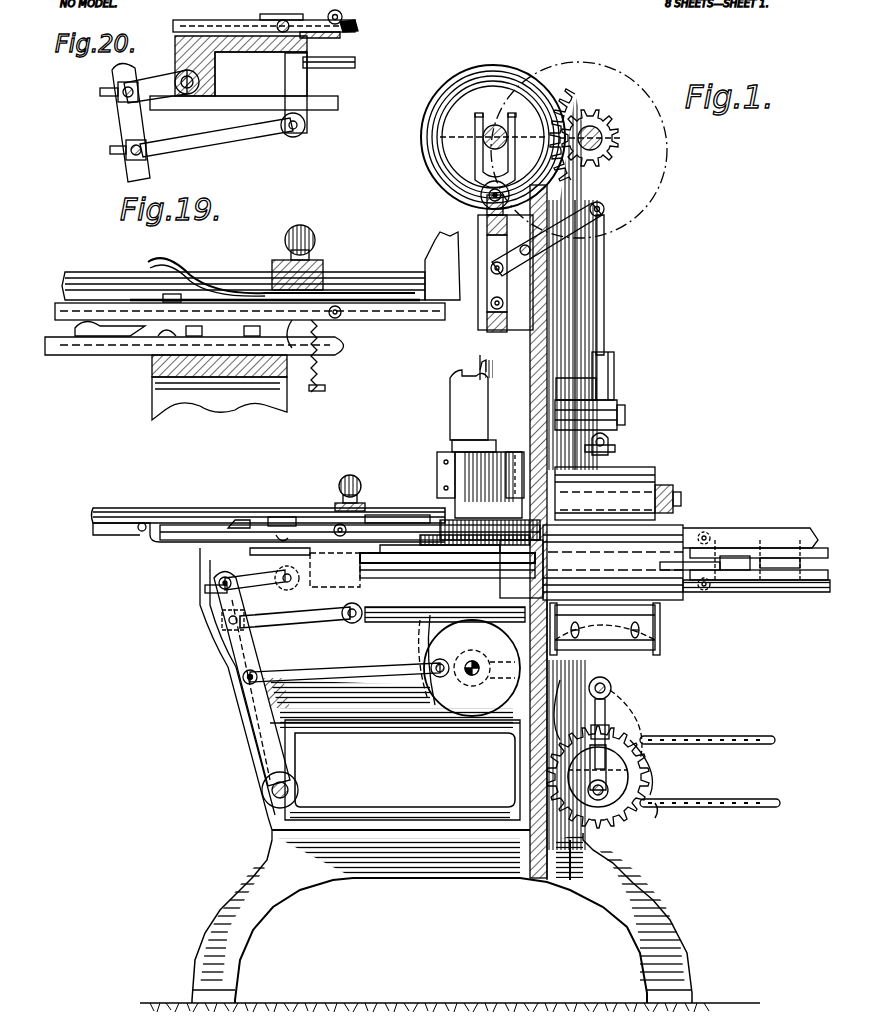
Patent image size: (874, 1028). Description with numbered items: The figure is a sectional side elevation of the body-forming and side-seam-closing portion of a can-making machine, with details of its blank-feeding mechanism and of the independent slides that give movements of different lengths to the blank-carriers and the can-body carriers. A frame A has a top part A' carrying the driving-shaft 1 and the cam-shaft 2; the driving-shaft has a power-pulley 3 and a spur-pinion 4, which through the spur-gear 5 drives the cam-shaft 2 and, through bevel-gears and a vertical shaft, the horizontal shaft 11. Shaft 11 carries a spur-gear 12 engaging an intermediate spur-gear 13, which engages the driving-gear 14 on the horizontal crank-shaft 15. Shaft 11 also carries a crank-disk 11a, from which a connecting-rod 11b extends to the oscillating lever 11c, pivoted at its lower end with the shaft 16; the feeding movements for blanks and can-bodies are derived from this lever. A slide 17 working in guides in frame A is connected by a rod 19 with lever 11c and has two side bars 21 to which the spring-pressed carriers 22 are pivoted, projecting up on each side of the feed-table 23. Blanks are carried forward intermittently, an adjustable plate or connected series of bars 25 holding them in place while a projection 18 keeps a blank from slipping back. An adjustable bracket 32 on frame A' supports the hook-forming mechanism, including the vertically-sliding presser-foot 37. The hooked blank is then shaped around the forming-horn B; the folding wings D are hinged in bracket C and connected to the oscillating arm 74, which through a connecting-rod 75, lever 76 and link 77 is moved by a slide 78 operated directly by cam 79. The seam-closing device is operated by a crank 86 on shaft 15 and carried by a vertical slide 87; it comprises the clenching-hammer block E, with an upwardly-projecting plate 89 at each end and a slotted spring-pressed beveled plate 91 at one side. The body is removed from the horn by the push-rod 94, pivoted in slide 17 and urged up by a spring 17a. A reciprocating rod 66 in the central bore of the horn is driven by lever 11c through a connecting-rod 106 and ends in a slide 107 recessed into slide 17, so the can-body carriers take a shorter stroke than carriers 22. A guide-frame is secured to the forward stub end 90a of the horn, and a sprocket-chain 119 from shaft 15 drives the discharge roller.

In FIG. 1, the driving-shaft 1 is at (596, 128).
In FIG. 1, the cam-shaft 2 is at (488, 132).
In FIG. 1, the power-pulley 3 is at (663, 153).
In FIG. 1, the spur-pinion 4 is at (606, 150).
In FIG. 1, the spur-gear 5 is at (556, 112).
In FIG. 1, the horizontal shaft 11 is at (470, 676).
In FIG. 1, the crank-disk 11a is at (440, 690).
In FIG. 1, the connecting-rod 11b is at (335, 664).
In FIG. 20, the oscillating lever 11c is at (122, 125).
In FIG. 1, the oscillating lever 11c is at (245, 712).
In FIG. 1, the spur-gear 12 is at (420, 650).
In FIG. 1, the intermediate spur-gear 13 is at (626, 710).
In FIG. 1, the driving-gear 14 is at (620, 820).
In FIG. 1, the horizontal crank-shaft 15 is at (660, 738).
In FIG. 1, the shaft 16 is at (272, 792).
In FIG. 20, the slide 17 is at (244, 73).
In FIG. 19, the slide 17 is at (152, 392).
In FIG. 1, the slide 17 is at (305, 569).
In FIG. 1, the spring 17a is at (285, 540).
In FIG. 19, the projection 18 is at (185, 298).
In FIG. 1, the projection 18 is at (298, 520).
In FIG. 20, the rod 19 is at (178, 96).
In FIG. 1, the rod 19 is at (250, 576).
In FIG. 20, the side bars 21 is at (345, 22).
In FIG. 19, the side bars 21 is at (338, 352).
In FIG. 1, the side bars 21 is at (160, 545).
In FIG. 19, the spring-pressed carriers 22 is at (140, 298).
In FIG. 1, the spring-pressed carriers 22 is at (165, 520).
In FIG. 19, the feed-table 23 is at (432, 320).
In FIG. 1, the feed-table 23 is at (312, 524).
In FIG. 19, the adjustable plate or connected series of bars 25 is at (170, 296).
In FIG. 1, the adjustable bracket 32 is at (440, 452).
In FIG. 19, the vertically-sliding presser-foot 37 is at (425, 262).
In FIG. 1, the vertically-sliding presser-foot 37 is at (470, 258).
In FIG. 20, the reciprocating rod 66 is at (340, 73).
In FIG. 1, the reciprocating rod 66 is at (412, 560).
In FIG. 1, the oscillating arm 74 is at (615, 382).
In FIG. 1, the connecting-rod 75 is at (606, 300).
In FIG. 1, the lever 76 is at (580, 238).
In FIG. 1, the link 77 is at (503, 290).
In FIG. 1, the slide 78 is at (485, 332).
In FIG. 1, the cam 79 is at (424, 152).
In FIG. 1, the crank 86 is at (660, 808).
In FIG. 1, the vertical slide 87 is at (612, 684).
In FIG. 1, the upwardly-projecting plate 89 is at (557, 610).
In FIG. 1, the forward stub end 90a is at (722, 540).
In FIG. 1, the slotted spring-pressed beveled plate 91 is at (640, 632).
In FIG. 20, the push-rod 94 is at (338, 36).
In FIG. 1, the push-rod 94 is at (440, 532).
In FIG. 20, the connecting-rod 106 is at (236, 136).
In FIG. 1, the connecting-rod 106 is at (292, 622).
In FIG. 20, the slide 107 is at (300, 84).
In FIG. 1, the slide 107 is at (352, 590).
In FIG. 1, the sprocket-chain 119 is at (728, 800).
In FIG. 1, the frame A is at (442, 916).
In FIG. 1, the top part of frame A' is at (627, 319).
In FIG. 1, the forming-horn B is at (591, 562).
In FIG. 1, the bracket C is at (553, 398).
In FIG. 1, the folding wing D is at (656, 470).
In FIG. 1, the block E is at (605, 622).